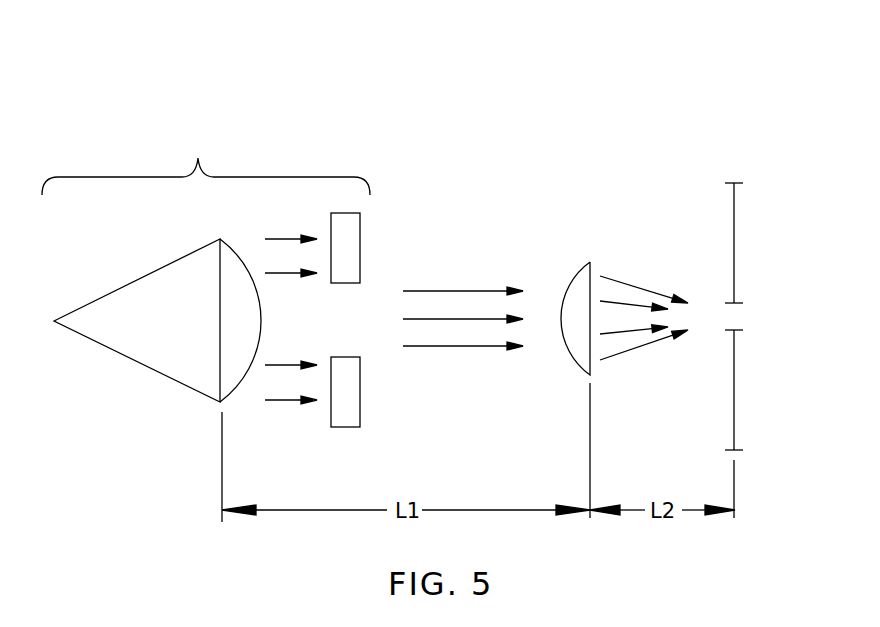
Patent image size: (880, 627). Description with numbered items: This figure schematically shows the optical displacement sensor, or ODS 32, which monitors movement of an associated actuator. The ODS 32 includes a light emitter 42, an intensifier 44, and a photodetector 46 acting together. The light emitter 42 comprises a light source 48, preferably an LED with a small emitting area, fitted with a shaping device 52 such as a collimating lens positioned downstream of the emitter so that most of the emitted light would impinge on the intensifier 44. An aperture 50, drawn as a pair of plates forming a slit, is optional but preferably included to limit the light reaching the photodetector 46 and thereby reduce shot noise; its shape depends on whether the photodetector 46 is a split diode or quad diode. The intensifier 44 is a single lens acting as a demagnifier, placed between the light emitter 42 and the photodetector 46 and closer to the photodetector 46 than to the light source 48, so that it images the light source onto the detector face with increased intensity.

The ODS 32 is at (590, 129).
The light emitter 42 is at (192, 136).
The intensifier 44 is at (589, 262).
The photodetector 46 is at (735, 392).
The light source 48 is at (215, 304).
The aperture 50 is at (361, 230).
The shaping device 52 is at (262, 337).